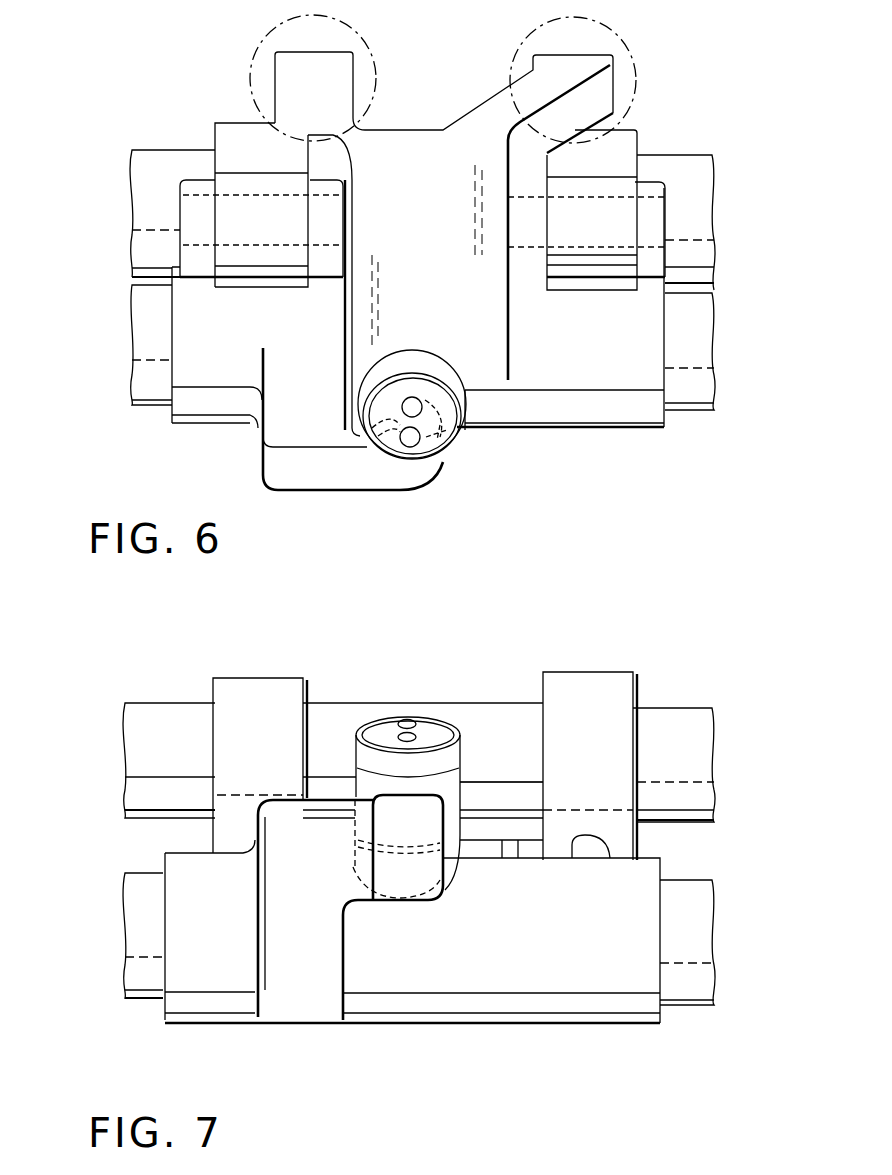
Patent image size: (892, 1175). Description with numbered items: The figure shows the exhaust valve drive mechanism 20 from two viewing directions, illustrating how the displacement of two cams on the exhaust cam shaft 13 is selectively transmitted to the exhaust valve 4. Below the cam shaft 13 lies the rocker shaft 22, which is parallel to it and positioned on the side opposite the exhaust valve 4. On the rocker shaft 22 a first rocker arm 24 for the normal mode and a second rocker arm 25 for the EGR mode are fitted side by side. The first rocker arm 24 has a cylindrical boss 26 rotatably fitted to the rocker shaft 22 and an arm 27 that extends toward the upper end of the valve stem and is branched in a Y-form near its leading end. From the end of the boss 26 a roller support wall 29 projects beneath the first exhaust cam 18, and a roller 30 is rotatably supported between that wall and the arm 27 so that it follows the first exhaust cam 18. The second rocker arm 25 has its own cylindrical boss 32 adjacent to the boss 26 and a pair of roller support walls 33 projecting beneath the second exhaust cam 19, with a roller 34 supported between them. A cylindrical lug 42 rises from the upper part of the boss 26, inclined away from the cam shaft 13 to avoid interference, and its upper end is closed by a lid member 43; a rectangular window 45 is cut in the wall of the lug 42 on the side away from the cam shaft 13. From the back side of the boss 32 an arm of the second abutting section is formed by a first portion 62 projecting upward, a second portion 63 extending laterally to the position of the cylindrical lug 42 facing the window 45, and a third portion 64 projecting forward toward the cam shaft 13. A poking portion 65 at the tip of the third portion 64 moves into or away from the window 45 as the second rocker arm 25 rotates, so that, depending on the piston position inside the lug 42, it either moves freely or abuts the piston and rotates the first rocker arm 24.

In FIG. 6, the exhaust valve 4 is at (258, 44).
In FIG. 6, the exhaust cam shaft 13 is at (700, 155).
In FIG. 7, the exhaust cam shaft 13 is at (672, 708).
In FIG. 6, the first exhaust cam 18 is at (630, 128).
In FIG. 7, the first exhaust cam 18 is at (586, 672).
In FIG. 6, the second exhaust cam 19 is at (243, 122).
In FIG. 7, the second exhaust cam 19 is at (254, 677).
In FIG. 6, the exhaust valve drive mechanism 20 is at (153, 78).
In FIG. 7, the exhaust valve drive mechanism 20 is at (150, 856).
In FIG. 6, the rocker shaft 22 is at (688, 411).
In FIG. 7, the rocker shaft 22 is at (680, 1003).
In FIG. 6, the first rocker arm 24 is at (563, 466).
In FIG. 7, the first rocker arm 24 is at (541, 1036).
In FIG. 6, the second rocker arm 25 is at (195, 456).
In FIG. 7, the second rocker arm 25 is at (228, 1034).
In FIG. 6, the cylindrical boss 26 is at (623, 413).
In FIG. 7, the cylindrical boss 26 is at (492, 1007).
In FIG. 6, the arm 27 is at (426, 138).
In FIG. 7, the arm 27 is at (570, 848).
In FIG. 6, the roller support wall 29 is at (667, 265).
In FIG. 6, the roller 30 is at (617, 220).
In FIG. 6, the cylindrical boss 32 is at (185, 415).
In FIG. 7, the cylindrical boss 32 is at (185, 1003).
In FIG. 6, the roller support walls 33 is at (192, 218).
In FIG. 6, the roller 34 is at (247, 172).
In FIG. 6, the cylindrical lug 42 is at (412, 364).
In FIG. 7, the cylindrical lug 42 is at (453, 760).
In FIG. 6, the lid member 43 is at (430, 405).
In FIG. 7, the lid member 43 is at (428, 728).
In FIG. 7, the window 45 is at (467, 782).
In FIG. 6, the first portion 62 is at (262, 438).
In FIG. 7, the first portion 62 is at (323, 950).
In FIG. 6, the second portion 63 is at (353, 478).
In FIG. 7, the second portion 63 is at (387, 903).
In FIG. 6, the third portion 64 is at (443, 462).
In FIG. 6, the poking portion 65 is at (466, 394).
In FIG. 7, the poking portion 65 is at (400, 797).